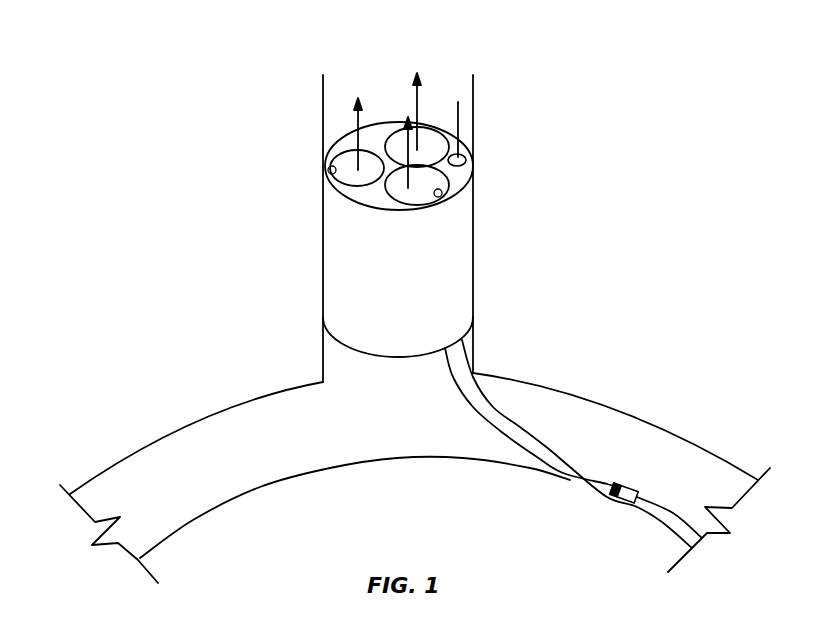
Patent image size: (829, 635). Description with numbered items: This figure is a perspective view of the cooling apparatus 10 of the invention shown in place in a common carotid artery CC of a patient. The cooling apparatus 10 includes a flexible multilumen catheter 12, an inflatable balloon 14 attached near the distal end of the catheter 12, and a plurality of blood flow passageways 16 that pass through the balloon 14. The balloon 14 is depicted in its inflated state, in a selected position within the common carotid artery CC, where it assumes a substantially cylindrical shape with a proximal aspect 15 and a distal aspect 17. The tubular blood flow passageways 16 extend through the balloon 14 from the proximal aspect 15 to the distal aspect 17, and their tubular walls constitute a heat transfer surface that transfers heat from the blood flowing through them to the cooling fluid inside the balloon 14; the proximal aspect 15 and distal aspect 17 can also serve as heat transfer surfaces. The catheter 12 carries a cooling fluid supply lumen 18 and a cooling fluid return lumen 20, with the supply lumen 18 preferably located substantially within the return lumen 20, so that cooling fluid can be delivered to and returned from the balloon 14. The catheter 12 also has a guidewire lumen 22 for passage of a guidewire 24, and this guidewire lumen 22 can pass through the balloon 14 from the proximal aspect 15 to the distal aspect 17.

The cooling apparatus 10 is at (543, 238).
The flexible multilumen catheter 12 is at (517, 447).
The inflatable balloon 14 is at (457, 248).
The proximal aspect 15 is at (338, 343).
The blood flow passageways 16 is at (330, 166).
The distal aspect 17 is at (345, 148).
The cooling fluid supply lumen 18 is at (617, 487).
The cooling fluid return lumen 20 is at (563, 475).
The guidewire lumen 22 is at (466, 153).
The guidewire 24 is at (460, 123).
The common carotid artery CC is at (473, 93).